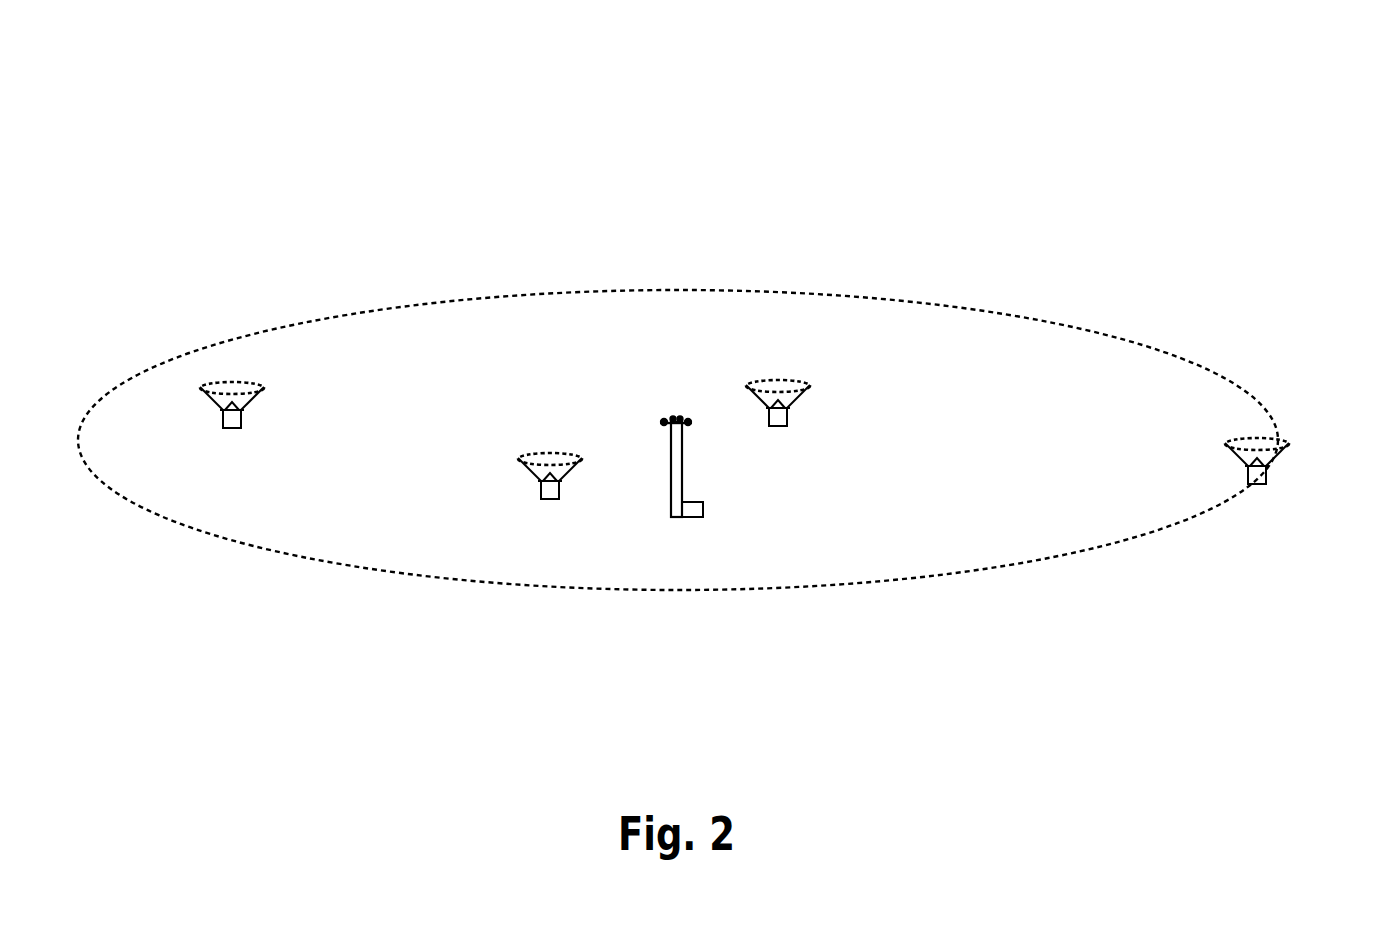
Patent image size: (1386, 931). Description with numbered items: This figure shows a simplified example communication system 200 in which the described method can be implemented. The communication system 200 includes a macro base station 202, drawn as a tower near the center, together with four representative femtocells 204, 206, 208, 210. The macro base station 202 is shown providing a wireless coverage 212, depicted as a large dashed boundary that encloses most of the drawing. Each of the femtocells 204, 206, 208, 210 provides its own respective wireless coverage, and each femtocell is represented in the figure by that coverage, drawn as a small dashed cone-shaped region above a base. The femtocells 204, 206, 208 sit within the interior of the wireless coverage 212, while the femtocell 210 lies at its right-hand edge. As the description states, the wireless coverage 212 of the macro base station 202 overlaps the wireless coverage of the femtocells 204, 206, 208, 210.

The communication system 200 is at (1062, 141).
The macro base station 202 is at (683, 454).
The femtocell 204 is at (265, 388).
The femtocell 206 is at (583, 459).
The femtocell 208 is at (811, 386).
The femtocell 210 is at (1290, 444).
The wireless coverage 212 is at (745, 290).